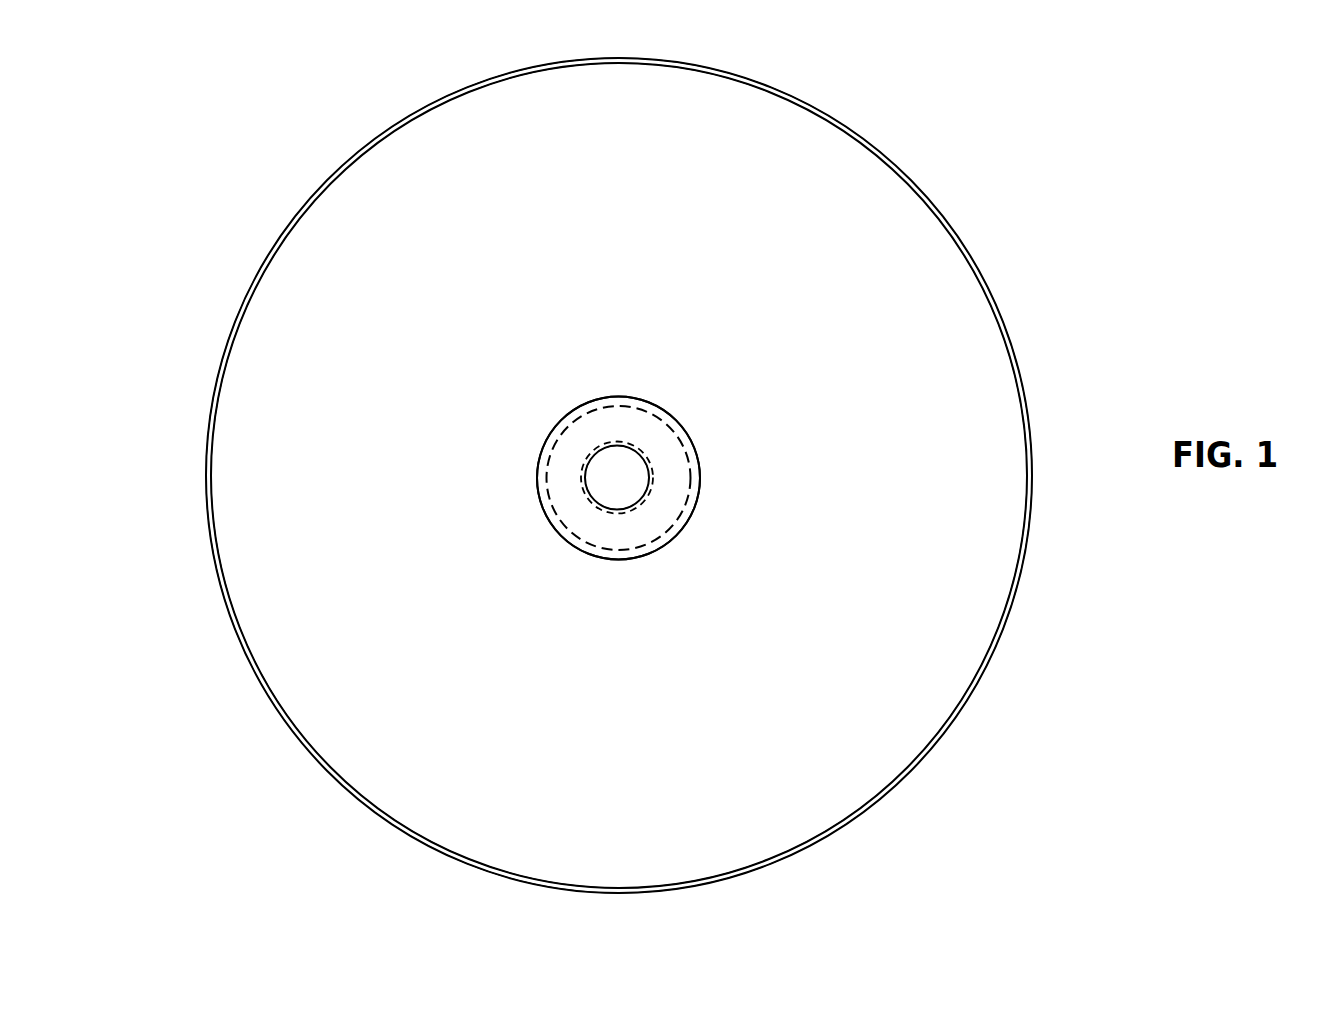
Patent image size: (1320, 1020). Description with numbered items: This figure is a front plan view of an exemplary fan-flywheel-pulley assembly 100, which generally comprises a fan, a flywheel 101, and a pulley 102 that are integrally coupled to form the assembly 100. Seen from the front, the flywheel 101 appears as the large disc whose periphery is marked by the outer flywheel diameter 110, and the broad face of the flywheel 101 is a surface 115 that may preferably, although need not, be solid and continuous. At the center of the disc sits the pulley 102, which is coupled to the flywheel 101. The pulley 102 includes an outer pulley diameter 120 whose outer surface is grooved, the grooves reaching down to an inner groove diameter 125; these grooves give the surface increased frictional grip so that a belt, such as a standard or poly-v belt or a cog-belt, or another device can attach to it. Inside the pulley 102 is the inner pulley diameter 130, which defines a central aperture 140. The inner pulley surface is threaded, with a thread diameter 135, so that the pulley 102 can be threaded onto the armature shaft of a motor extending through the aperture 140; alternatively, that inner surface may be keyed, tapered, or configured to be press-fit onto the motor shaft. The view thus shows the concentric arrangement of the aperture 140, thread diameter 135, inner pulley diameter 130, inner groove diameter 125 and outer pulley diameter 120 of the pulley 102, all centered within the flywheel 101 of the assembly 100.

The fan-flywheel-pulley assembly 100 is at (260, 192).
The flywheel 101 is at (942, 208).
The pulley 102 is at (633, 398).
The outer flywheel diameter 110 is at (972, 258).
The surface of the flywheel 115 is at (935, 352).
The outer pulley diameter 120 is at (680, 423).
The inner groove diameter 125 is at (688, 495).
The inner pulley diameter 130 is at (592, 452).
The thread diameter 135 is at (585, 496).
The aperture 140 is at (628, 487).